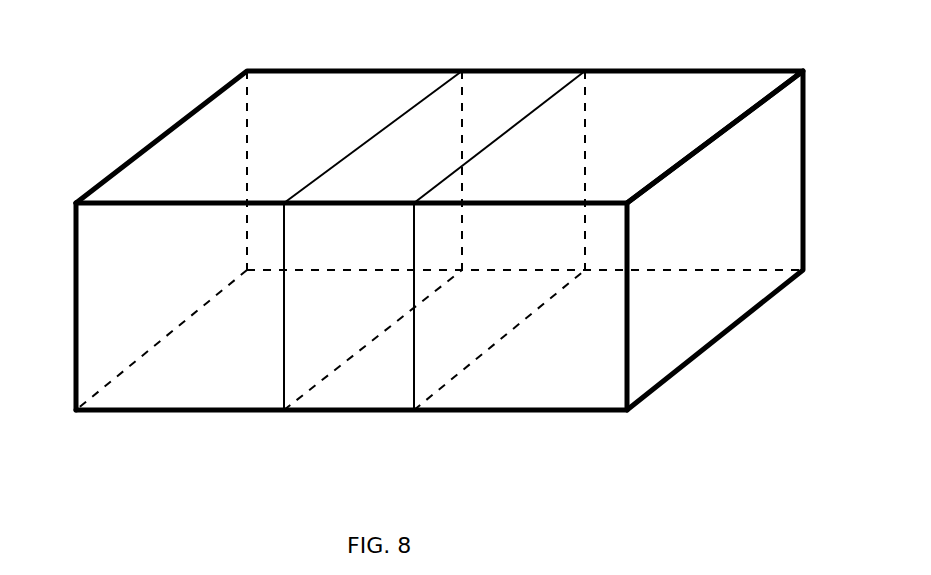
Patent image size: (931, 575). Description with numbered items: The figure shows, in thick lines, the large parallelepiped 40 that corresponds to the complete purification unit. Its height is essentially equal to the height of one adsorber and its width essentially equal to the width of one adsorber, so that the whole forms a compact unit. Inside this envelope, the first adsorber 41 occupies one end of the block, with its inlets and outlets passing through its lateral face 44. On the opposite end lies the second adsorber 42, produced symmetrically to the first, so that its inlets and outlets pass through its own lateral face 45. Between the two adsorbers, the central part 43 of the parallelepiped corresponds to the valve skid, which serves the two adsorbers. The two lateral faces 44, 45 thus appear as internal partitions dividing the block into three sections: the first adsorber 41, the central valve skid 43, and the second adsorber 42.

The large parallelepiped 40 is at (76, 290).
The first adsorber 41 is at (800, 152).
The second adsorber 42 is at (192, 172).
The central part 43 is at (348, 292).
The lateral face 44 is at (558, 126).
The lateral face 45 is at (415, 140).